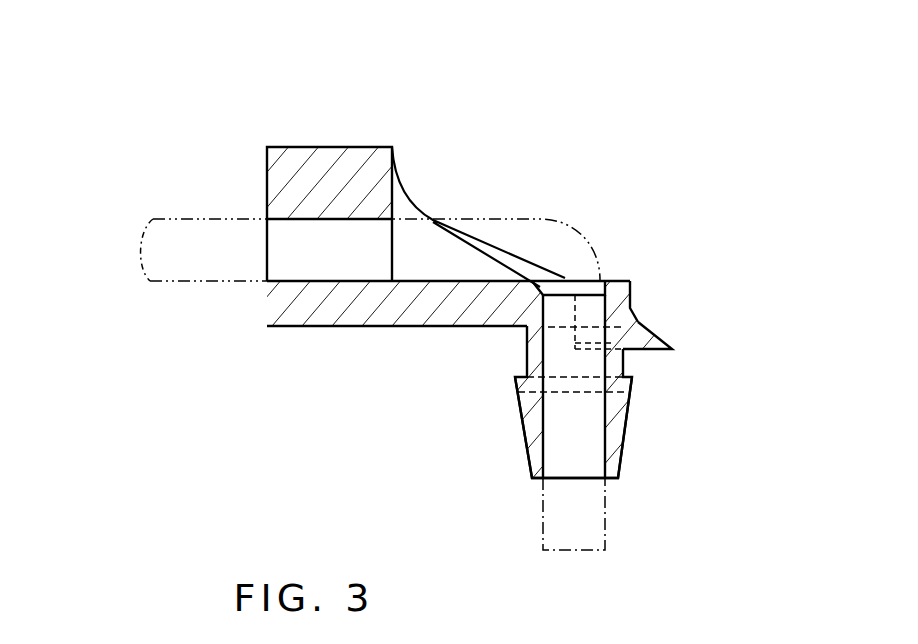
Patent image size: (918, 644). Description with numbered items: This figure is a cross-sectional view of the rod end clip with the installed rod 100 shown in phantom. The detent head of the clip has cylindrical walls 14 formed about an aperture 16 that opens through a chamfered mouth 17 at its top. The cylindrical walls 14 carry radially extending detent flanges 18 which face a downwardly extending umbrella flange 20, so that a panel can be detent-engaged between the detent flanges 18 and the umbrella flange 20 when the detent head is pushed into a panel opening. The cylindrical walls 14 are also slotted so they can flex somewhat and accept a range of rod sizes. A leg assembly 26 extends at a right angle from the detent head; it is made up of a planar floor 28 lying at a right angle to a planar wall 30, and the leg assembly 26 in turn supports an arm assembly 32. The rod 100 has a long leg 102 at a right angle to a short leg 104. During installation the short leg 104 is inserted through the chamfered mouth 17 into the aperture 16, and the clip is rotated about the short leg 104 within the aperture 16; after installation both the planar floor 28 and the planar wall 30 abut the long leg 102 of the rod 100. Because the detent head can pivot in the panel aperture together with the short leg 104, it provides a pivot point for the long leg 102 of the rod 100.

The cylindrical walls 14 is at (523, 355).
The aperture 16 is at (605, 457).
The chamfered mouth 17 is at (600, 272).
The radially extending detent flanges 18 is at (627, 433).
The umbrella flange 20 is at (648, 320).
The leg assembly 26 is at (400, 343).
The planar floor 28 is at (328, 308).
The planar wall 30 is at (402, 207).
The arm assembly 32 is at (337, 128).
The rod 100 is at (227, 203).
The long leg 102 is at (170, 218).
The short leg 104 is at (608, 535).